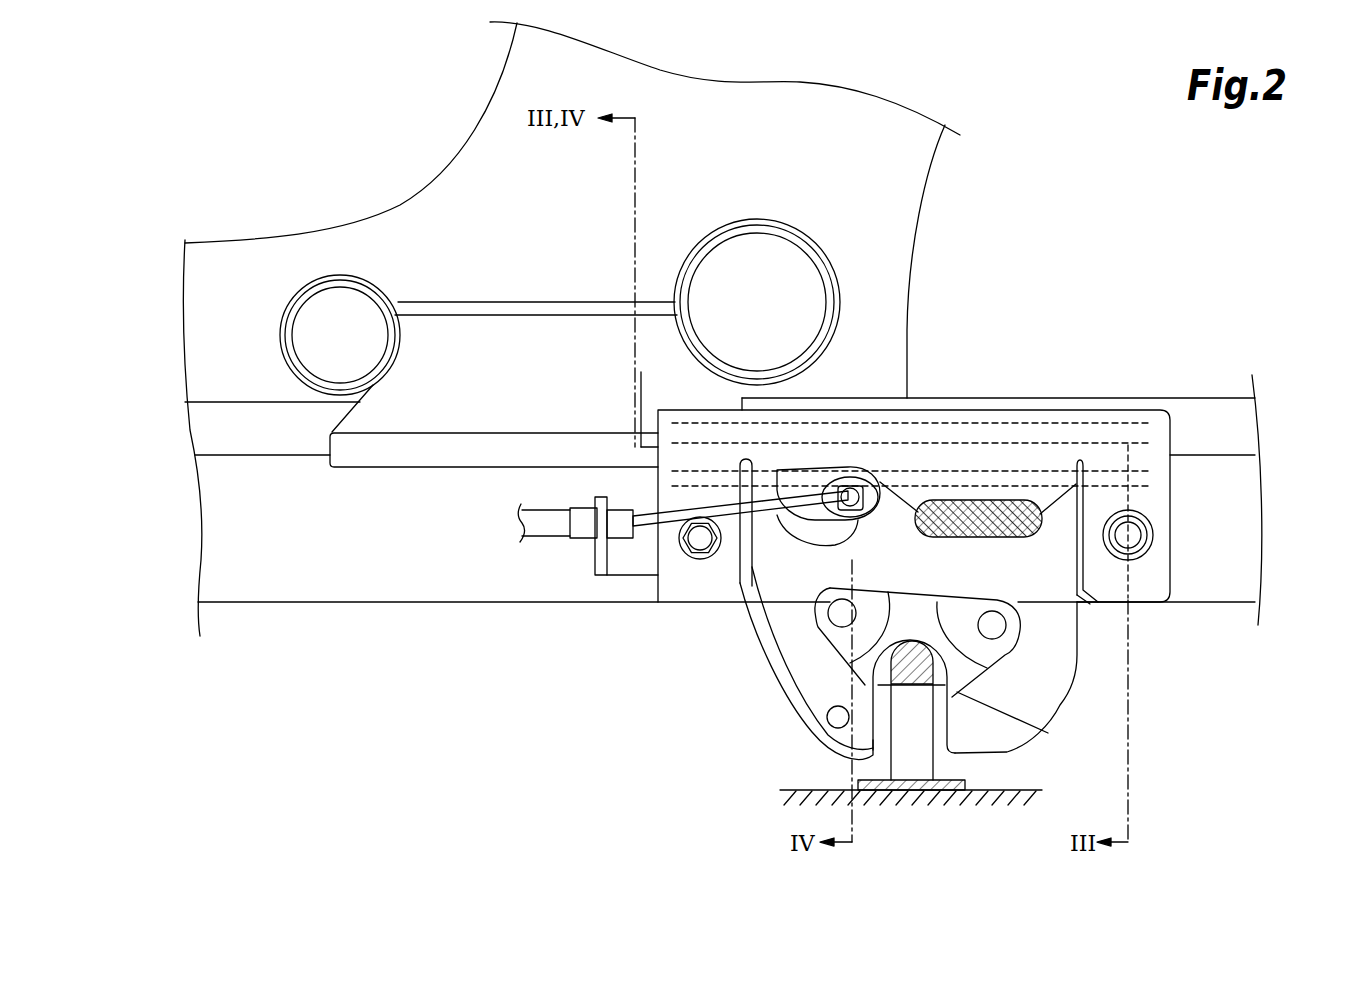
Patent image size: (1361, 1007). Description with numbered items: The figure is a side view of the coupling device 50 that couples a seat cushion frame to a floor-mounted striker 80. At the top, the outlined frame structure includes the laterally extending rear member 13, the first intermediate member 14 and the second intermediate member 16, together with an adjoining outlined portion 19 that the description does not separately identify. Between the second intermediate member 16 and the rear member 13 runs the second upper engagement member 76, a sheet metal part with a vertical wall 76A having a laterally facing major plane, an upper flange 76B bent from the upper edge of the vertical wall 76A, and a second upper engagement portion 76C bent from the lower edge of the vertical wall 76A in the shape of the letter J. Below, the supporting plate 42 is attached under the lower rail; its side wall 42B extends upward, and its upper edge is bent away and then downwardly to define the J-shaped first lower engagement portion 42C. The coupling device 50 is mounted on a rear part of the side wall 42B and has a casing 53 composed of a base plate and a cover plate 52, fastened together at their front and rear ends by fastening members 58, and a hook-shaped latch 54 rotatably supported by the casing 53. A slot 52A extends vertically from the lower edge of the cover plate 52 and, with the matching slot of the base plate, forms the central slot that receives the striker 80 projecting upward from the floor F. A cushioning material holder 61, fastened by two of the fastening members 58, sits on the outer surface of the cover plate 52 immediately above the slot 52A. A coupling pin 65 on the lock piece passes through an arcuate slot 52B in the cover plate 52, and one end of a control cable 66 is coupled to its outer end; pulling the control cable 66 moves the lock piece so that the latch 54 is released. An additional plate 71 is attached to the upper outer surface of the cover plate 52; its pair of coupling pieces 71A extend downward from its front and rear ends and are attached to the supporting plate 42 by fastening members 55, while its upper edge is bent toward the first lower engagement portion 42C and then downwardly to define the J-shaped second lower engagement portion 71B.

The rear member 13 is at (798, 232).
The first intermediate member 14 is at (239, 240).
The second intermediate member 16 is at (282, 317).
The vehicle body outline 19 is at (517, 62).
The supporting plate 42 is at (264, 610).
The side wall 42B is at (210, 540).
The first lower engagement portion 42C is at (200, 430).
The coupling device 50 is at (1067, 703).
The cover plate 52 is at (1060, 642).
The slot 52A is at (882, 765).
The arcuate slot 52B is at (838, 470).
The casing 53 is at (790, 683).
The latch 54 is at (853, 737).
The fastening members 55 is at (693, 558).
The fastening members 58 is at (836, 614).
The cushioning material holder 61 is at (1040, 728).
The coupling pin 65 is at (880, 487).
The control cable 66 is at (542, 525).
The additional plate 71 is at (1172, 568).
The coupling pieces 71A is at (695, 583).
The second lower engagement portion 71B is at (1003, 413).
The second upper engagement member 76 is at (362, 478).
The vertical wall 76A is at (490, 332).
The upper flange 76B is at (560, 305).
The second upper engagement portion 76C is at (432, 462).
The striker 80 is at (923, 762).
The floor F is at (1022, 790).